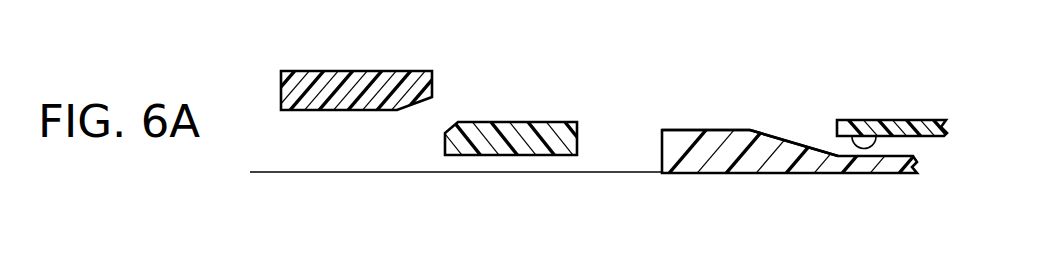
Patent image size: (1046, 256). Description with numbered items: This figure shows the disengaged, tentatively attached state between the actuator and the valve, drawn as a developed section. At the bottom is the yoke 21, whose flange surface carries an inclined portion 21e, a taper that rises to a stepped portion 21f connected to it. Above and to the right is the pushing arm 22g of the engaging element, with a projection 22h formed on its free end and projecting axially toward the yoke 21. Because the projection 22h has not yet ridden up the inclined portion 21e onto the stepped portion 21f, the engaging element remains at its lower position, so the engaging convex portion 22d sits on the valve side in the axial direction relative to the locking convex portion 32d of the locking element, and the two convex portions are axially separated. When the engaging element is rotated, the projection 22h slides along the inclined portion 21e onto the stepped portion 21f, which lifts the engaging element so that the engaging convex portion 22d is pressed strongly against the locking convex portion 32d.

The yoke 21 is at (760, 177).
The inclined portion 21e is at (795, 138).
The stepped portion 21f is at (686, 128).
The engaging convex portion 22d is at (528, 120).
The pushing arm 22g is at (918, 118).
The projection 22h is at (854, 135).
The locking convex portion 32d is at (348, 70).